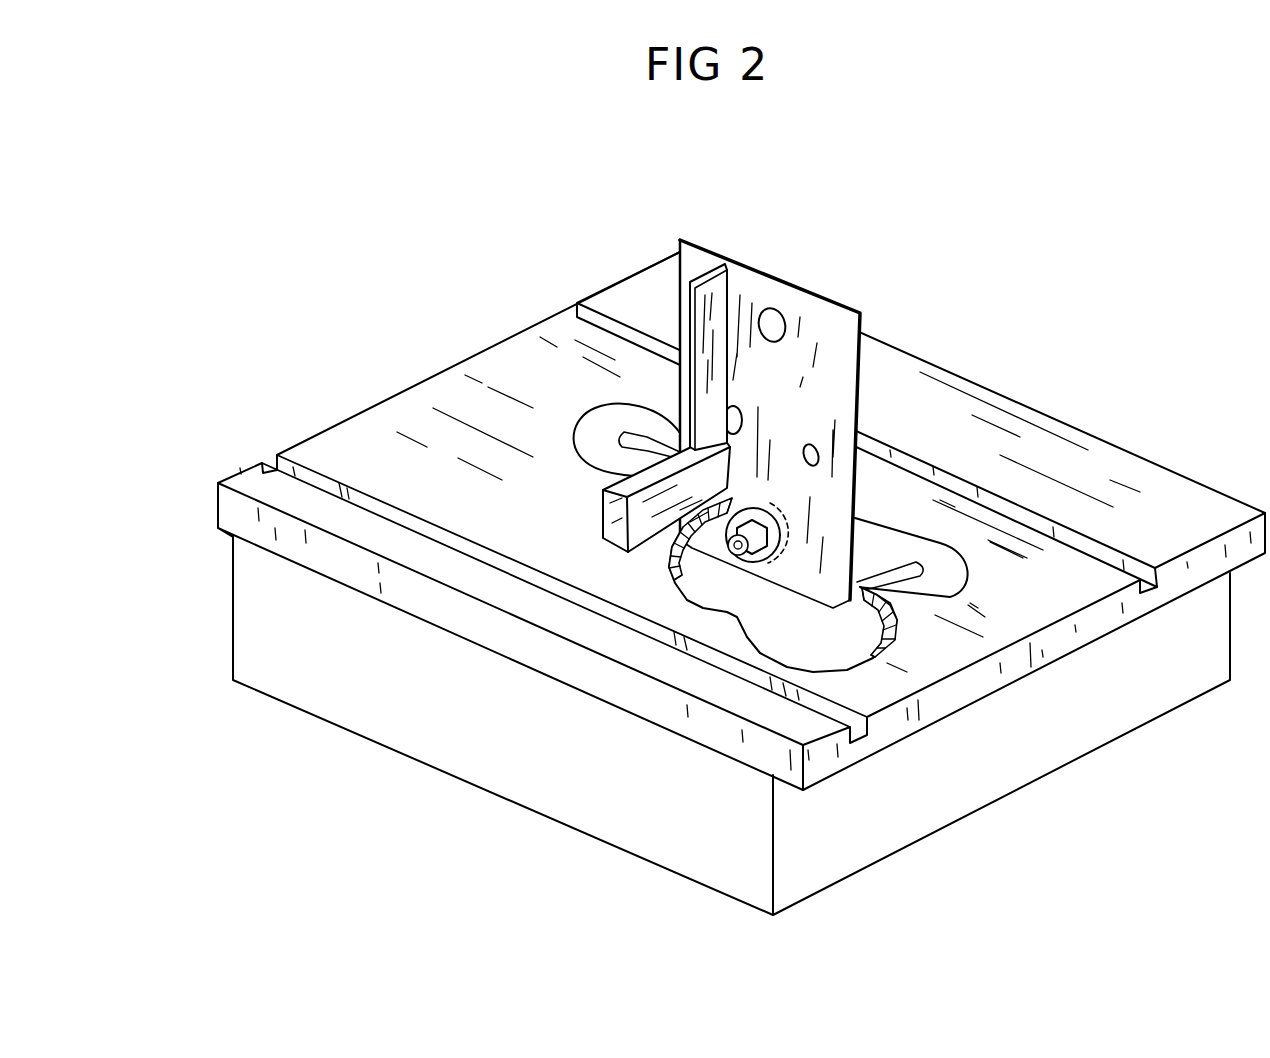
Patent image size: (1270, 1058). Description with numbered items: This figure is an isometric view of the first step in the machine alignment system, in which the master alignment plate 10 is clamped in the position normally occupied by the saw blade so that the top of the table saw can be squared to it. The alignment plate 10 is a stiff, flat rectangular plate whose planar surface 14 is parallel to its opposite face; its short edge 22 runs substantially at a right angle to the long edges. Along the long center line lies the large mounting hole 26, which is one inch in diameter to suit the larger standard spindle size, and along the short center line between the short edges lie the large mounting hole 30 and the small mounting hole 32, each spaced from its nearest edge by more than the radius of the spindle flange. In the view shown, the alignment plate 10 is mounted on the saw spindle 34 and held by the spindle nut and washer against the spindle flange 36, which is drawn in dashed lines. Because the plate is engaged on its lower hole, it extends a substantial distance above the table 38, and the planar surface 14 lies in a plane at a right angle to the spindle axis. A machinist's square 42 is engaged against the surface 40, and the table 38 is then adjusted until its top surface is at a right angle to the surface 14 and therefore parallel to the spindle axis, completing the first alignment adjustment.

The alignment plate 10 is at (842, 398).
The planar surface 14 is at (680, 307).
The short edge 22 is at (747, 262).
The large mounting hole 26 is at (780, 318).
The large mounting hole 30 is at (740, 422).
The small mounting hole 32 is at (822, 462).
The saw spindle 34 is at (735, 553).
The spindle flange 36 is at (785, 560).
The table 38 is at (1113, 447).
The surface 40 is at (438, 388).
The machinist's square 42 is at (606, 483).